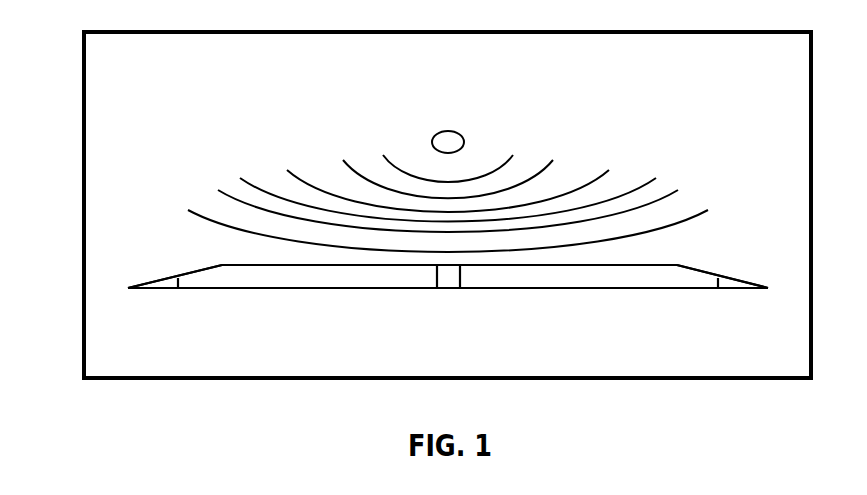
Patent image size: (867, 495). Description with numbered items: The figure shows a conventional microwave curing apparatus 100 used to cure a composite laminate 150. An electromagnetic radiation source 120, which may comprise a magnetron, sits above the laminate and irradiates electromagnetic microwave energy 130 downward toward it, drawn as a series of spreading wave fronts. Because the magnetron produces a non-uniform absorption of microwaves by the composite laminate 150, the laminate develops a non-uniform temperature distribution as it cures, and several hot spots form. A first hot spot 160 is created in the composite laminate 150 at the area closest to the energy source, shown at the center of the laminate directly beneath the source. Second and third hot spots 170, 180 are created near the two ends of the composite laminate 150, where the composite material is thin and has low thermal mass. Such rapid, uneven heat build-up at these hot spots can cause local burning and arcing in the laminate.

The microwave curing apparatus 100 is at (106, 30).
The electromagnetic radiation source 120 is at (448, 130).
The electromagnetic microwave energy 130 is at (285, 165).
The composite laminate 150 is at (617, 290).
The first hot spot 160 is at (449, 290).
The second hot spot 170 is at (158, 290).
The third hot spot 180 is at (736, 290).